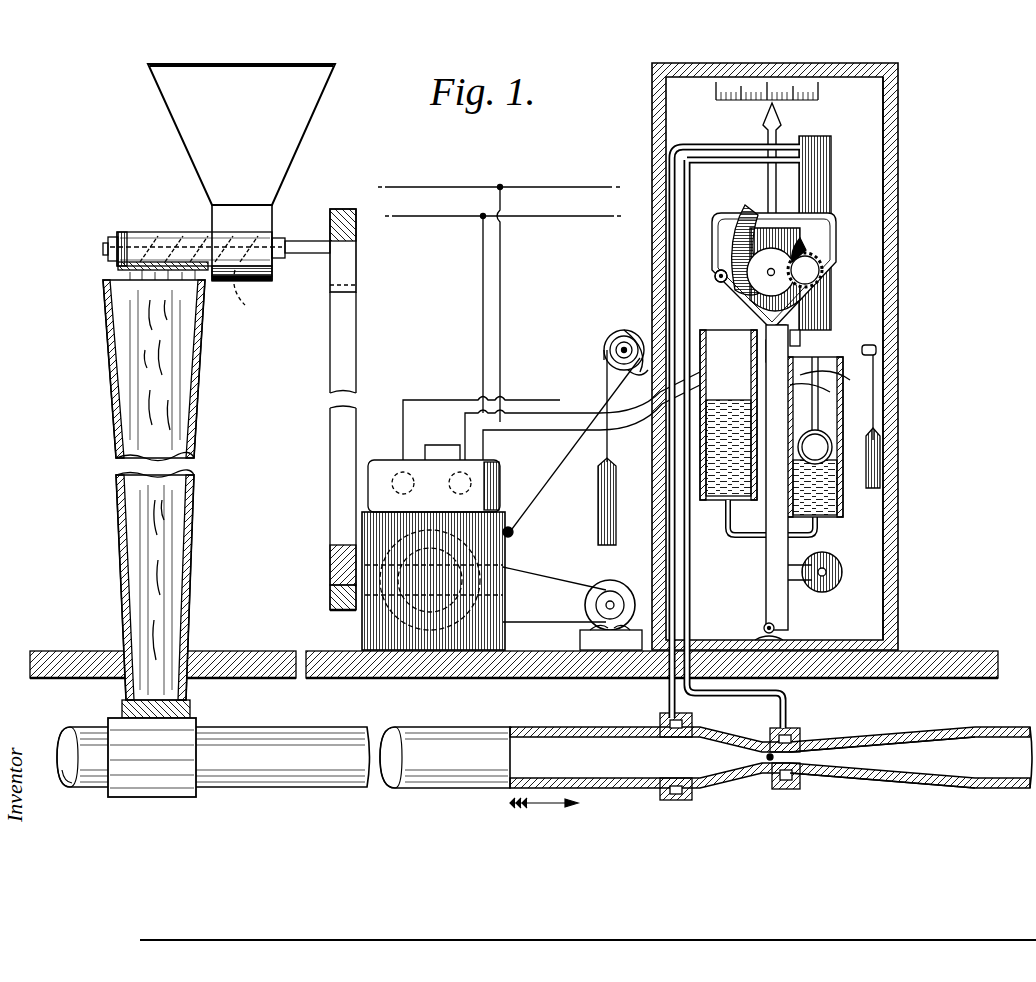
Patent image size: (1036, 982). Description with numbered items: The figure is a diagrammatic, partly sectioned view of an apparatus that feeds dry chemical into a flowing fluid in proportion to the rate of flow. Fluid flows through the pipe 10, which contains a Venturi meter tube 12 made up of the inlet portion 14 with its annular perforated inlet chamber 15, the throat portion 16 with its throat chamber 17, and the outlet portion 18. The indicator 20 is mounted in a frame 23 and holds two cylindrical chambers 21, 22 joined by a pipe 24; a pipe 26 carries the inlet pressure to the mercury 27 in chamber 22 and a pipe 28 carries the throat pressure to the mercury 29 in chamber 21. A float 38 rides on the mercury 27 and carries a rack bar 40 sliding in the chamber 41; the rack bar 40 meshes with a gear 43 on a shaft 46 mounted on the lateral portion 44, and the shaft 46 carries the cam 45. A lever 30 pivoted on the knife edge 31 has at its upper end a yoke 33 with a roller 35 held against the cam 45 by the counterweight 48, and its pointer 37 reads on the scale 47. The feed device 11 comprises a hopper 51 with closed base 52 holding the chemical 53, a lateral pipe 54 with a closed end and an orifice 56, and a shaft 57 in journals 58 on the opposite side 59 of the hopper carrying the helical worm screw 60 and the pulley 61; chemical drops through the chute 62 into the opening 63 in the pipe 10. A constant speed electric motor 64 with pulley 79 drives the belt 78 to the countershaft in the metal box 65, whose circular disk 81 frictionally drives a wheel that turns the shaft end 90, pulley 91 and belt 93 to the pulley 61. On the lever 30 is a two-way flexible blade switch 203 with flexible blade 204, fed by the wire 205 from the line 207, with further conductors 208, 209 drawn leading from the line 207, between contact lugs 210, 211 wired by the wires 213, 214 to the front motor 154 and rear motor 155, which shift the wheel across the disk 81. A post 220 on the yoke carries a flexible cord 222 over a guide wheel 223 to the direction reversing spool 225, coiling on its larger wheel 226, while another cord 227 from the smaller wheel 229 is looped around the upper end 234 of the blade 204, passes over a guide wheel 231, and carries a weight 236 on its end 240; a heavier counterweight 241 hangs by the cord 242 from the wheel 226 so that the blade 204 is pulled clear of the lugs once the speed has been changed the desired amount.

The pipe 10 is at (430, 727).
The chemical feed device 11 is at (180, 148).
The Venturi meter tube 12 is at (810, 780).
The inlet portion 14 is at (682, 782).
The inlet chamber 15 is at (694, 718).
The throat portion 16 is at (776, 778).
The throat chamber 17 is at (795, 728).
The outlet portion 18 is at (870, 745).
The indicator 20 is at (900, 248).
The cylindrical chamber 21 is at (725, 505).
The cylindrical chamber 22 is at (845, 500).
The frame 23 is at (900, 310).
The pipe 24 is at (752, 540).
The pipe 26 is at (690, 618).
The mercury column 27 is at (830, 492).
The pipe 28 is at (678, 592).
The mercury column 29 is at (722, 465).
The lever 30 is at (786, 600).
The knife edge 31 is at (778, 626).
The yoke 33 is at (714, 226).
The roller 35 is at (707, 288).
The pointer 37 is at (766, 130).
The float 38 is at (822, 442).
The rack bar 40 is at (812, 258).
The chamber 41 is at (831, 168).
The gear 43 is at (822, 272).
The lateral portion 44 is at (768, 235).
The cam 45 is at (745, 256).
The shaft 46 is at (766, 272).
The scale 47 is at (822, 92).
The counterweight 48 is at (838, 580).
The hopper 51 is at (190, 112).
The base 52 is at (272, 280).
The chemical 53 is at (155, 318).
The pipe 54 is at (178, 238).
The orifice 56 is at (135, 265).
The shaft 57 is at (295, 256).
The journals 58 is at (110, 241).
The opposite side 59 is at (262, 218).
The helical worm screw 60 is at (247, 297).
The pulley 61 is at (357, 247).
The chute 62 is at (118, 520).
The opening 63 is at (122, 706).
The electric motor 64 is at (612, 588).
The metal box 65 is at (366, 633).
The belt 78 is at (522, 573).
The pulley 79 is at (598, 604).
The circular disk 81 is at (462, 540).
The projecting end 90 is at (335, 590).
The pulley 91 is at (335, 555).
The belt 93 is at (340, 510).
The front motor 154 is at (450, 488).
The rear motor 155 is at (398, 473).
The two-way flexible blade switch 203 is at (850, 380).
The flexible blade 204 is at (790, 345).
The wire 205 is at (556, 428).
The line 207 is at (520, 195).
The wire 208 is at (830, 392).
The wire 209 is at (481, 337).
The contact lug 210 is at (800, 342).
The contact lug 211 is at (752, 352).
The wire 213 is at (512, 410).
The wire 214 is at (418, 398).
The post 220 is at (382, 550).
The flexible cord 222 is at (552, 482).
The guide wheel 223 is at (509, 527).
The direction reversing spool 225 is at (612, 338).
The larger wheel 226 is at (610, 348).
The flexible cord 227 is at (630, 328).
The smaller wheel 229 is at (630, 335).
The guide wheel 231 is at (878, 350).
The upper end 234 is at (786, 333).
The weight 236 is at (880, 470).
The end 240 is at (878, 428).
The counterweight 241 is at (616, 480).
The cord 242 is at (608, 366).